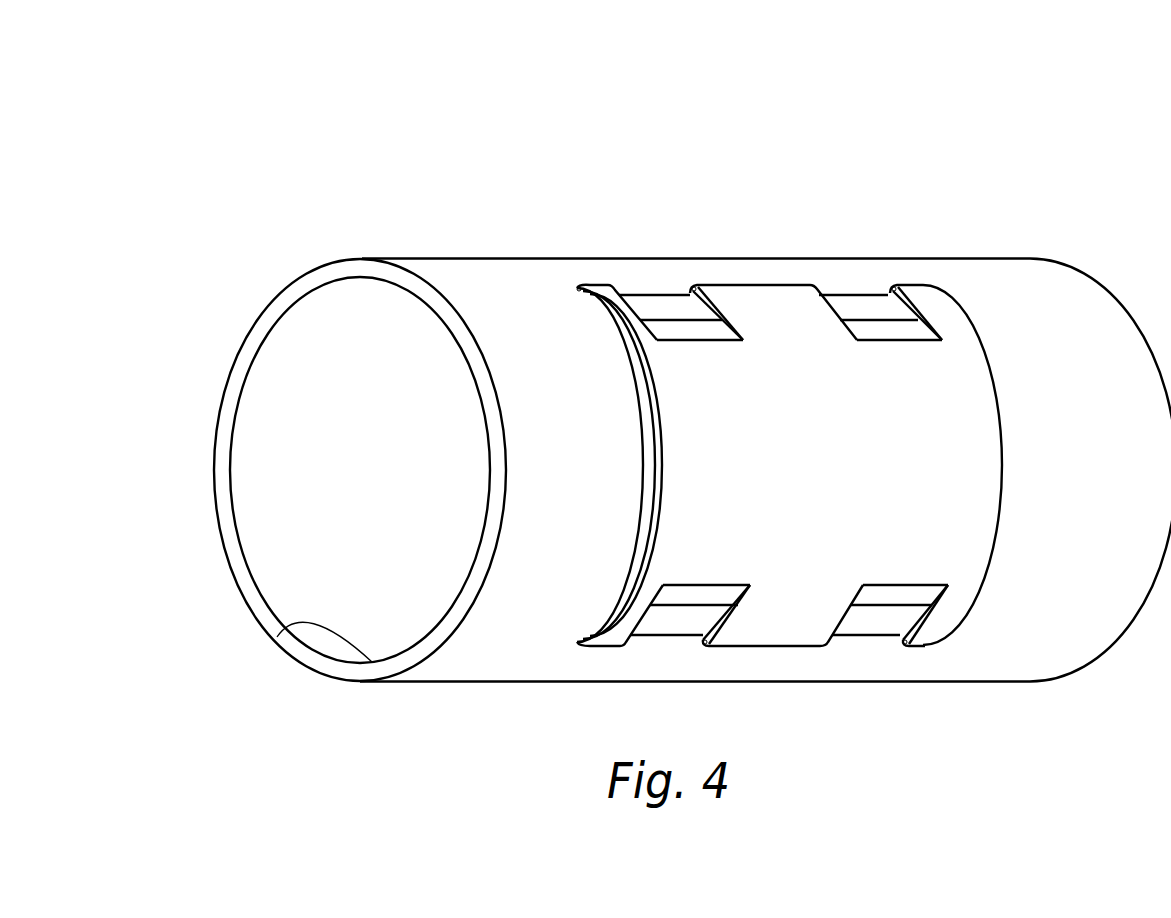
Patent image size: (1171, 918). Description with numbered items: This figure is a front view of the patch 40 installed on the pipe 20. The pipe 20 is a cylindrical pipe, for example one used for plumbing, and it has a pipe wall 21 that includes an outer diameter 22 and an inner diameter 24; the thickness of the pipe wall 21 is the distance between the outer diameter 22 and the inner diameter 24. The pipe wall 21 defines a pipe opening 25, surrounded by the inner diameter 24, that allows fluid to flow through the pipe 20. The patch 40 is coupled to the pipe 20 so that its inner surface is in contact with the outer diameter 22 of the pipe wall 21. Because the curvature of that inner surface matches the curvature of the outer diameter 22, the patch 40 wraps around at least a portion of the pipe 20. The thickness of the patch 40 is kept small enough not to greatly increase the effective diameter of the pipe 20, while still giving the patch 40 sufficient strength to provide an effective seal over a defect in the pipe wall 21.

The pipe 20 is at (663, 386).
The pipe wall 21 is at (663, 406).
The outer diameter 22 is at (573, 258).
The inner diameter 24 is at (277, 637).
The pipe opening 25 is at (293, 411).
The patch 40 is at (802, 550).